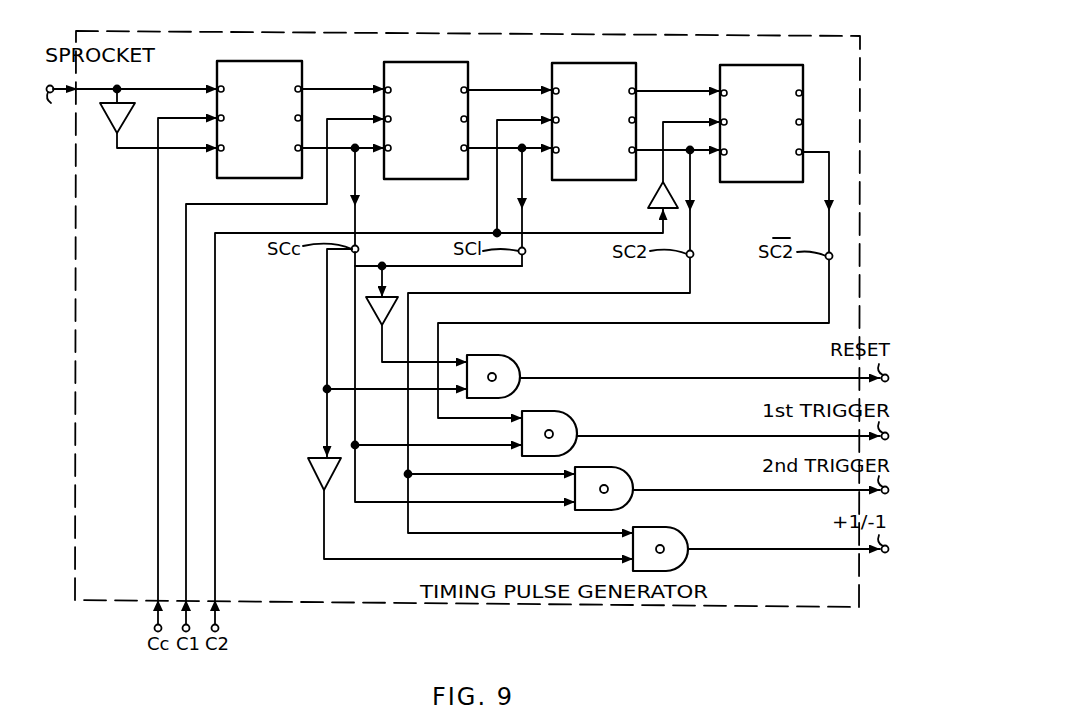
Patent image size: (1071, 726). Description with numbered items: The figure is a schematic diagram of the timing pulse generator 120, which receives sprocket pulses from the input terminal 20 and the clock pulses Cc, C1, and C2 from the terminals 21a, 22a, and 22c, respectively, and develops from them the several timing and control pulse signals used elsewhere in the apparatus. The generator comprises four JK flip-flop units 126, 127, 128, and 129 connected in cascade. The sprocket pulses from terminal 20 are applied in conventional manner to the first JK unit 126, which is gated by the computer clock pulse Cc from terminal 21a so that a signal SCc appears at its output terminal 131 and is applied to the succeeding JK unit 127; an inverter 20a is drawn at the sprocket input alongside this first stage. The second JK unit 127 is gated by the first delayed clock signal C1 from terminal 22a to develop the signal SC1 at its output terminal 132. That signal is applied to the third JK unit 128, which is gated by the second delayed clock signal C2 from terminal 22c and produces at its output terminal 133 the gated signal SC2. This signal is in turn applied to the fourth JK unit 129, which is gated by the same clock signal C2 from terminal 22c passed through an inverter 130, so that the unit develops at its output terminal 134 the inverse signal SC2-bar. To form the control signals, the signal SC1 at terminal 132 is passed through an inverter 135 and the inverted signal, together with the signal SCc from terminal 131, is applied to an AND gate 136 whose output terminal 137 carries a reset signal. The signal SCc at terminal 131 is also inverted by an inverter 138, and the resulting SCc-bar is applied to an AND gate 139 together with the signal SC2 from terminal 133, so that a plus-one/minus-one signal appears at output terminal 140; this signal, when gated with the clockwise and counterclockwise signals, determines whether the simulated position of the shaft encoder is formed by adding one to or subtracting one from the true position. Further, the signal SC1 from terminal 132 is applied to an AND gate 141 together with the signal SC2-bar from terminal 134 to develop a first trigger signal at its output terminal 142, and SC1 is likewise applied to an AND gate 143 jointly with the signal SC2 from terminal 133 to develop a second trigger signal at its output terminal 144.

The sprocket pulse input terminal 20 is at (80, 108).
The inverter 20a is at (130, 112).
The clock pulse Cc terminal 21a is at (155, 627).
The first delayed clock signal C1 terminal 22a is at (190, 627).
The second delayed clock signal C2 terminal 22c is at (218, 630).
The timing pulse generator 120 is at (540, 33).
The first JK flip-flop unit 126 is at (256, 61).
The second JK flip-flop unit 127 is at (422, 62).
The third JK flip-flop unit 128 is at (599, 63).
The fourth JK flip-flop unit 129 is at (771, 65).
The inverter 130 is at (648, 200).
The SCc output terminal 131 is at (359, 249).
The SC1 output terminal 132 is at (526, 251).
The SC2 output terminal 133 is at (693, 257).
The SC2-bar output terminal 134 is at (827, 260).
The inverter 135 is at (396, 298).
The AND gate 136 is at (506, 355).
The reset signal output terminal 137 is at (888, 381).
The inverter 138 is at (315, 472).
The AND gate 139 is at (677, 527).
The +1/−1 signal output terminal 140 is at (886, 553).
The AND gate 141 is at (563, 411).
The first trigger signal output terminal 142 is at (902, 449).
The AND gate 143 is at (622, 467).
The second trigger signal output terminal 144 is at (900, 505).